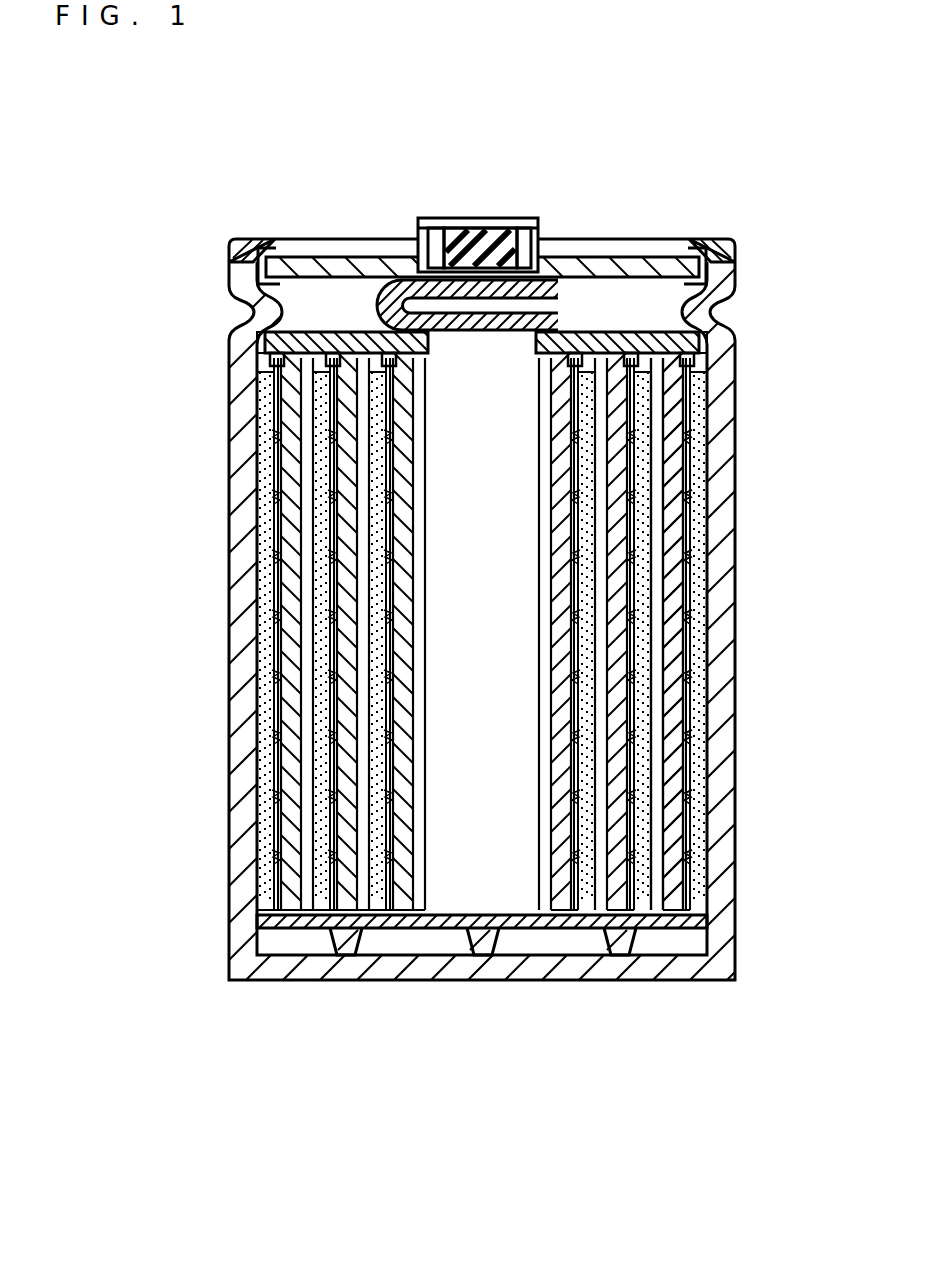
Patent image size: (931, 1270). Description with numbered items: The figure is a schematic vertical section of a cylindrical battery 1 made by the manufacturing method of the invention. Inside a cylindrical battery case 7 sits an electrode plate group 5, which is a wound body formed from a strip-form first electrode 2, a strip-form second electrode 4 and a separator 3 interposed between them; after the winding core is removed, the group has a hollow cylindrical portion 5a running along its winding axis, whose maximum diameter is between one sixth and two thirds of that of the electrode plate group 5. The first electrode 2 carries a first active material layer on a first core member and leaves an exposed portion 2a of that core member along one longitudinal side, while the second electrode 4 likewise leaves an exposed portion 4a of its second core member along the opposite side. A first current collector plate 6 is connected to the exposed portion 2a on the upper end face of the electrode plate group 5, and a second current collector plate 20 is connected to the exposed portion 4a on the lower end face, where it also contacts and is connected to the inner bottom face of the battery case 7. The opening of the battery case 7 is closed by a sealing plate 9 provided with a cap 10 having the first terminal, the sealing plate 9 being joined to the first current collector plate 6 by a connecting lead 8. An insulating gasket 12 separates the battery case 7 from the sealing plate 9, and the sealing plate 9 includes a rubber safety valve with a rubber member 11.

The cylindrical battery 1 is at (653, 170).
The first electrode 2 is at (668, 446).
The exposed portion of the first core member 2a is at (715, 338).
The separator 3 is at (728, 496).
The second electrode 4 is at (707, 552).
The exposed portion of the second core member 4a is at (262, 908).
The electrode plate group 5 is at (820, 417).
The hollow cylindrical portion 5a is at (468, 770).
The first current collector plate 6 is at (262, 343).
The cylindrical battery case 7 is at (722, 708).
The connecting lead 8 is at (383, 282).
The sealing plate 9 is at (543, 265).
The cap 10 is at (440, 220).
The rubber member 11 is at (487, 220).
The insulating gasket 12 is at (722, 236).
The second current collector plate 20 is at (722, 931).